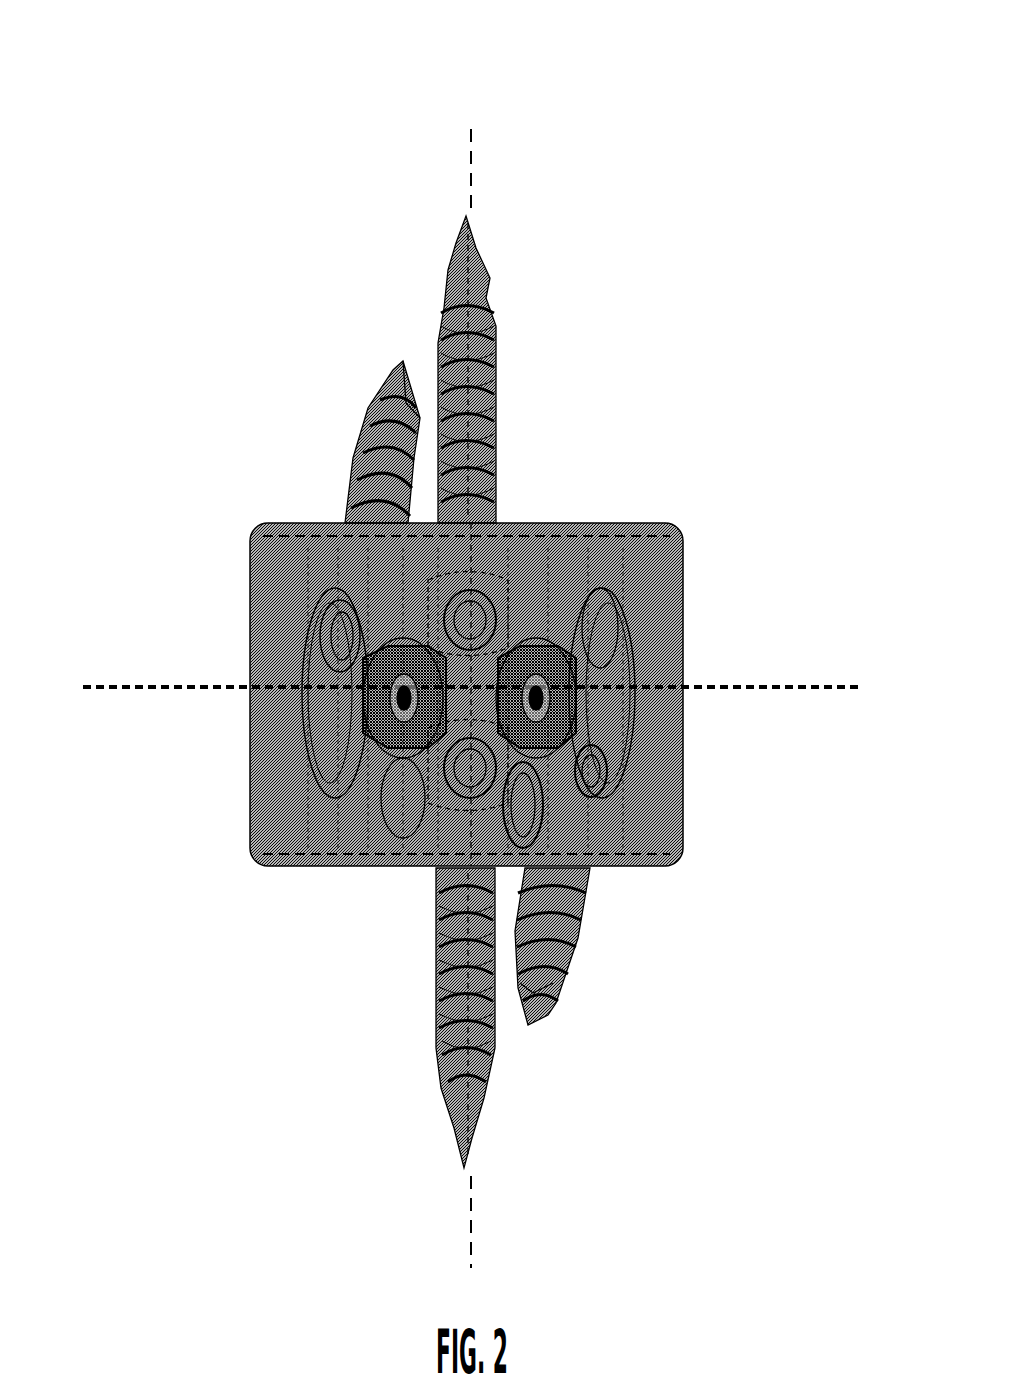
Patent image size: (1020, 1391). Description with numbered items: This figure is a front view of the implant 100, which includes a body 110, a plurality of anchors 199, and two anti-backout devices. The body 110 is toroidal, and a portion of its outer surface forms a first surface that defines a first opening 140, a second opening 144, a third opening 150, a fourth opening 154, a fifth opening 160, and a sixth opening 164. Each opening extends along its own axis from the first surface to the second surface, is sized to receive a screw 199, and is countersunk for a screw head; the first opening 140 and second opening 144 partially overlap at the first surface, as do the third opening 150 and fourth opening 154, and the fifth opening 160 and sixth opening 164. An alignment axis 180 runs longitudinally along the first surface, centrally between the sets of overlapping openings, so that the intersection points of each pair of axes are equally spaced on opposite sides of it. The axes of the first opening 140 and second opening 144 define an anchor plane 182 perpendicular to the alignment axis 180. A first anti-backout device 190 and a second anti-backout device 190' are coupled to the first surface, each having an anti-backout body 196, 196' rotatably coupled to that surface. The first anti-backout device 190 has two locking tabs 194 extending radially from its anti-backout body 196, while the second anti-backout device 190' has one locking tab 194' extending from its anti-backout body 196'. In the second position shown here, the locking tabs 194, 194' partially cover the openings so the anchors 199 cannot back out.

The implant 100 is at (210, 165).
The body 110 is at (257, 547).
The first opening 140 is at (475, 620).
The second opening 144 is at (455, 800).
The third opening 150 is at (393, 352).
The fourth opening 154 is at (347, 715).
The fifth opening 160 is at (575, 650).
The sixth opening 164 is at (545, 790).
The alignment axis 180 is at (148, 686).
The anchor plane 182 is at (468, 194).
The first anti-backout device 190 is at (354, 871).
The second anti-backout device 190' is at (567, 883).
The locking tabs 194 is at (279, 801).
The locking tab 194' is at (669, 797).
The anti-backout body 196 is at (378, 867).
The anti-backout body 196' is at (539, 908).
The anchors 199 is at (480, 336).